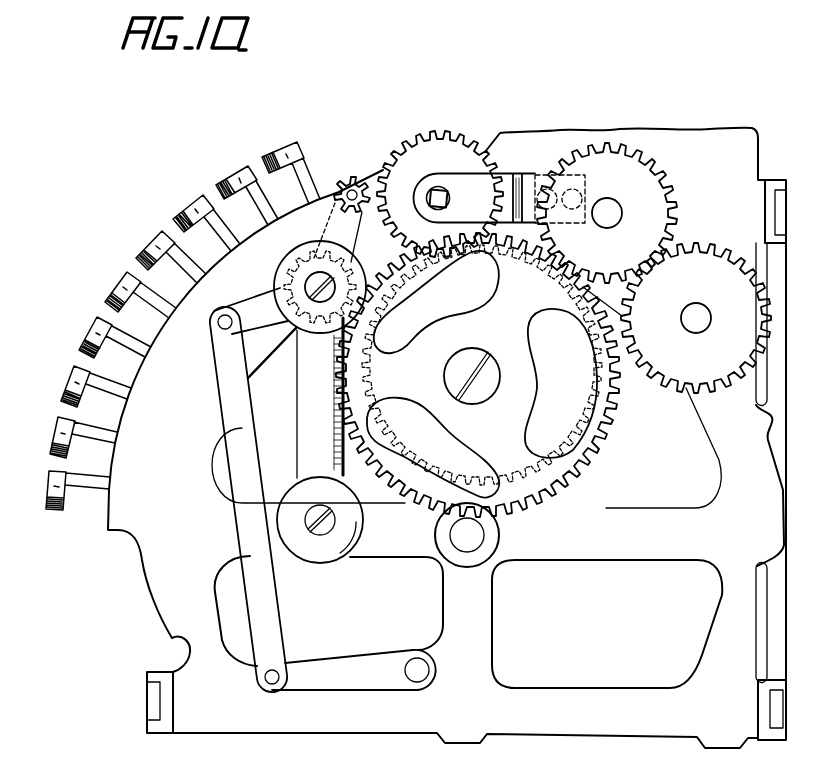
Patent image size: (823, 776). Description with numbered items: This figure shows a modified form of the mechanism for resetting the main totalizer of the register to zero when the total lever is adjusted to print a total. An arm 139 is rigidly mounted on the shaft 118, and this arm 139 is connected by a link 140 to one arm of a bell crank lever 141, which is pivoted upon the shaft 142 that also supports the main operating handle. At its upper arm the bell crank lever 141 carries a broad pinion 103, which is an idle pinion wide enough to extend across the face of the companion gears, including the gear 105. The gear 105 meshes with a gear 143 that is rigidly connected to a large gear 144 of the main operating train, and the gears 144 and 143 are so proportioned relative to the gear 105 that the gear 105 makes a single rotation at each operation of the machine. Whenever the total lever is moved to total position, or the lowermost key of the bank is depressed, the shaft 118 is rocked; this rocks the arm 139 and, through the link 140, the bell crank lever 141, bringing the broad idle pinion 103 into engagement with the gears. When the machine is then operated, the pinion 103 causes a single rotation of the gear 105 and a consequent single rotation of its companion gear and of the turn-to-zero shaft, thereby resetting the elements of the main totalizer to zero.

The broad pinion 103 is at (353, 178).
The gear 105 is at (486, 146).
The shaft 118 is at (428, 668).
The arm 139 is at (375, 638).
The link 140 is at (243, 421).
The bell crank lever 141 is at (261, 295).
The shaft 142 is at (318, 272).
The gear 143 is at (611, 400).
The large gear 144 is at (585, 458).